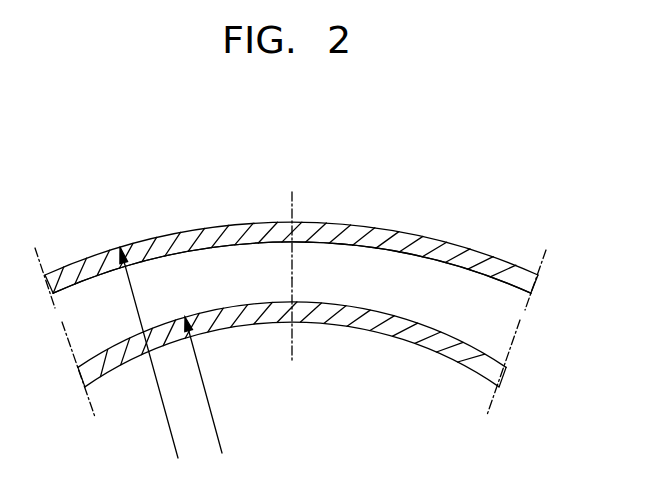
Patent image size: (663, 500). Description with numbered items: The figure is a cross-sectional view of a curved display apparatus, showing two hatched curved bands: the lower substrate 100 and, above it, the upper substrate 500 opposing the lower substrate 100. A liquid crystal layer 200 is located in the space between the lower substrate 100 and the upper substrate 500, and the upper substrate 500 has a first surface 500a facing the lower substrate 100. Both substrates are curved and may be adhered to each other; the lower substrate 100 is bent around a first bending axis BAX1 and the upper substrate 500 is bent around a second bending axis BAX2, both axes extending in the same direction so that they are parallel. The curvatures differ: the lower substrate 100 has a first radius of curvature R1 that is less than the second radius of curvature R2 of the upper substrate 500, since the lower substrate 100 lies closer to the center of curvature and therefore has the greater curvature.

The lower substrate 100 is at (440, 338).
The liquid crystal layer 200 is at (400, 287).
The upper substrate 500 is at (507, 272).
The first surface 500a is at (217, 258).
The first bending axis BAX1 is at (290, 334).
The second bending axis BAX2 is at (291, 221).
The first radius of curvature R1 is at (194, 385).
The second radius of curvature R2 is at (140, 352).